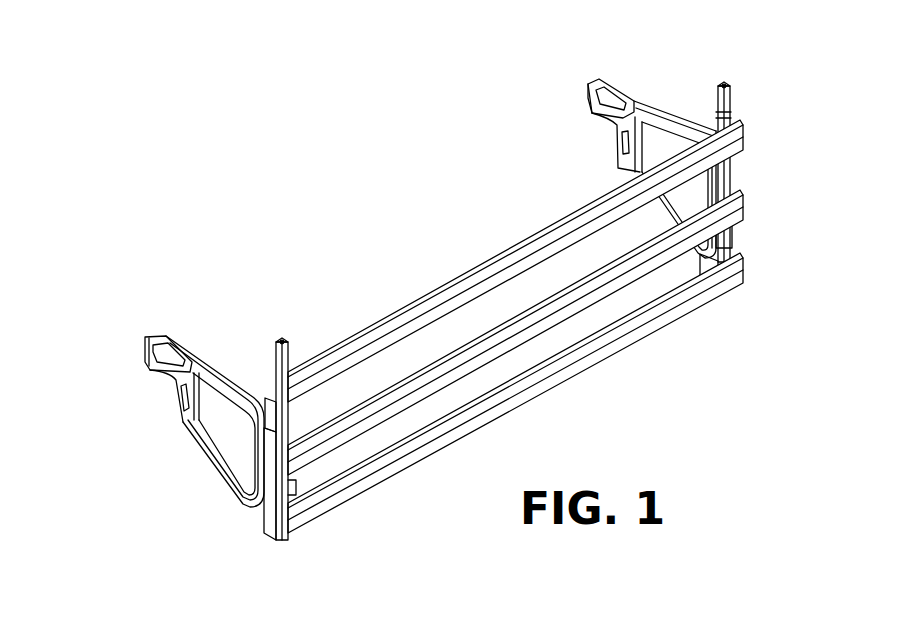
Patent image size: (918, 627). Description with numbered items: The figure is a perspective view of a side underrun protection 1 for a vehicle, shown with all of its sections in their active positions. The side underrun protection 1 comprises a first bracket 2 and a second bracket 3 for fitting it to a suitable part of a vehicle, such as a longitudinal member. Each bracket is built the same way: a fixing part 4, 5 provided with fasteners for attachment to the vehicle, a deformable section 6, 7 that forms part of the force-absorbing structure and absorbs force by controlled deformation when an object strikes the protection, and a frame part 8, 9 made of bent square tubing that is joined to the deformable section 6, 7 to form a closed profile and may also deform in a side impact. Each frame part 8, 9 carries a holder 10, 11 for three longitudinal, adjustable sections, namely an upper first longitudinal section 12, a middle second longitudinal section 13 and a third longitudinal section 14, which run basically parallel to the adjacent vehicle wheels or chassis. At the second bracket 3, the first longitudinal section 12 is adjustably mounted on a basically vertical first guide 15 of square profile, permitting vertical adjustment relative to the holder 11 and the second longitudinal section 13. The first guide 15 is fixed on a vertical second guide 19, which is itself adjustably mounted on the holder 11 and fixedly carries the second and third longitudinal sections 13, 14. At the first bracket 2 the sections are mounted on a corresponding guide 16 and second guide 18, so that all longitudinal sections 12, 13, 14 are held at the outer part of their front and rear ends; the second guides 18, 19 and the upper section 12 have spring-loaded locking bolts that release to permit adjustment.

The side underrun protection 1 is at (422, 199).
The first bracket 2 is at (243, 302).
The second bracket 3 is at (568, 89).
The fixing part 4 is at (128, 349).
The fixing part 5 is at (615, 65).
The deformable section 6 is at (146, 404).
The deformable section 7 is at (578, 130).
The frame part 8 is at (200, 450).
The frame part 9 is at (670, 117).
The holder 10 is at (263, 513).
The holder 11 is at (700, 263).
The first longitudinal section 12 is at (742, 140).
The second longitudinal section 13 is at (742, 210).
The third longitudinal section 14 is at (745, 276).
The first guide 15 is at (730, 103).
The guide 16 is at (288, 352).
The second guide 18 is at (290, 488).
The second guide 19 is at (730, 240).